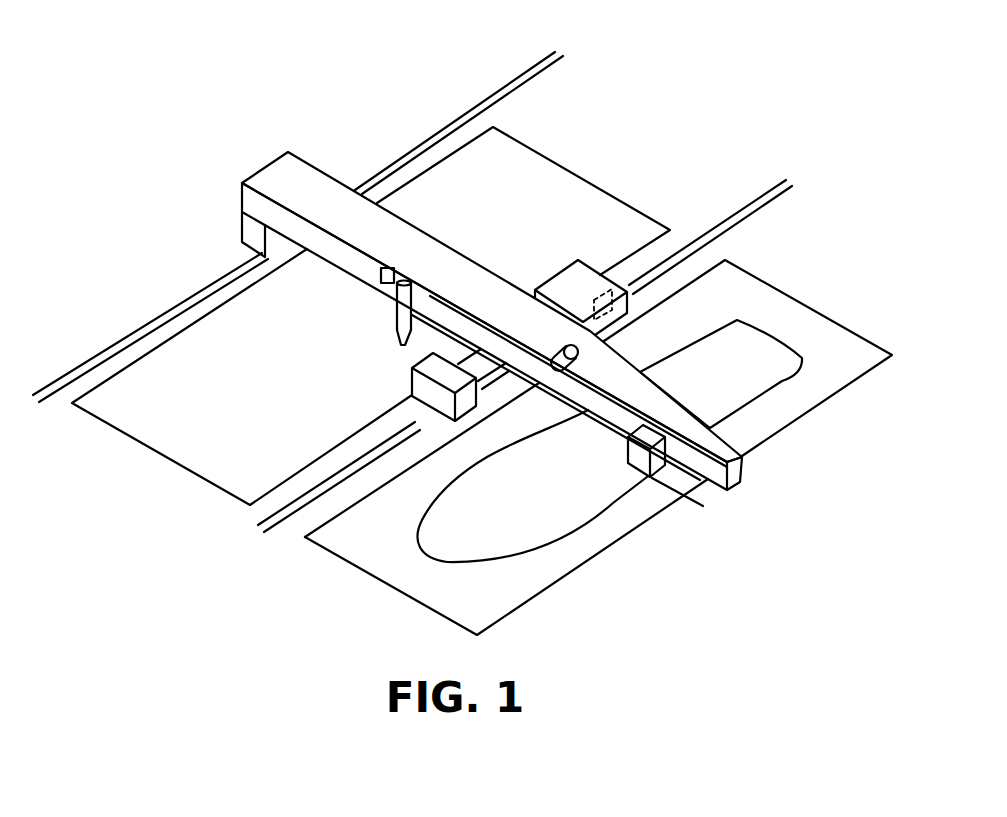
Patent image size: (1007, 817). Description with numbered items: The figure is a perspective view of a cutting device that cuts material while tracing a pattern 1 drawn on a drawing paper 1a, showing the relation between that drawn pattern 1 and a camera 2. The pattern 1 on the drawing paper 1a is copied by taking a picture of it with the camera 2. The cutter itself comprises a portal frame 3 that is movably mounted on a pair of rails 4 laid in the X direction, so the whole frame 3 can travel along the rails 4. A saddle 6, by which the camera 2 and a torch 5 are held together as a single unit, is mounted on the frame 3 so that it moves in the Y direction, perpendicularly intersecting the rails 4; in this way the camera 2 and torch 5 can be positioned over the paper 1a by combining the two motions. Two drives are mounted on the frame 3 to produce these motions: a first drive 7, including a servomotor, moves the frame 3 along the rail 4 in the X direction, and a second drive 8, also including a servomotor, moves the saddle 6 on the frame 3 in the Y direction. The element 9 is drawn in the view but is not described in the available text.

The figure 1 is at (510, 560).
The drawing paper 1a is at (613, 545).
The camera 2 is at (637, 457).
The portal frame 3 is at (417, 240).
The rails 4 is at (507, 85).
The torch 5 is at (395, 322).
The saddle 6 is at (458, 303).
The first drive 7 is at (618, 316).
The second drive 8 is at (557, 347).
The plate 9 is at (577, 193).